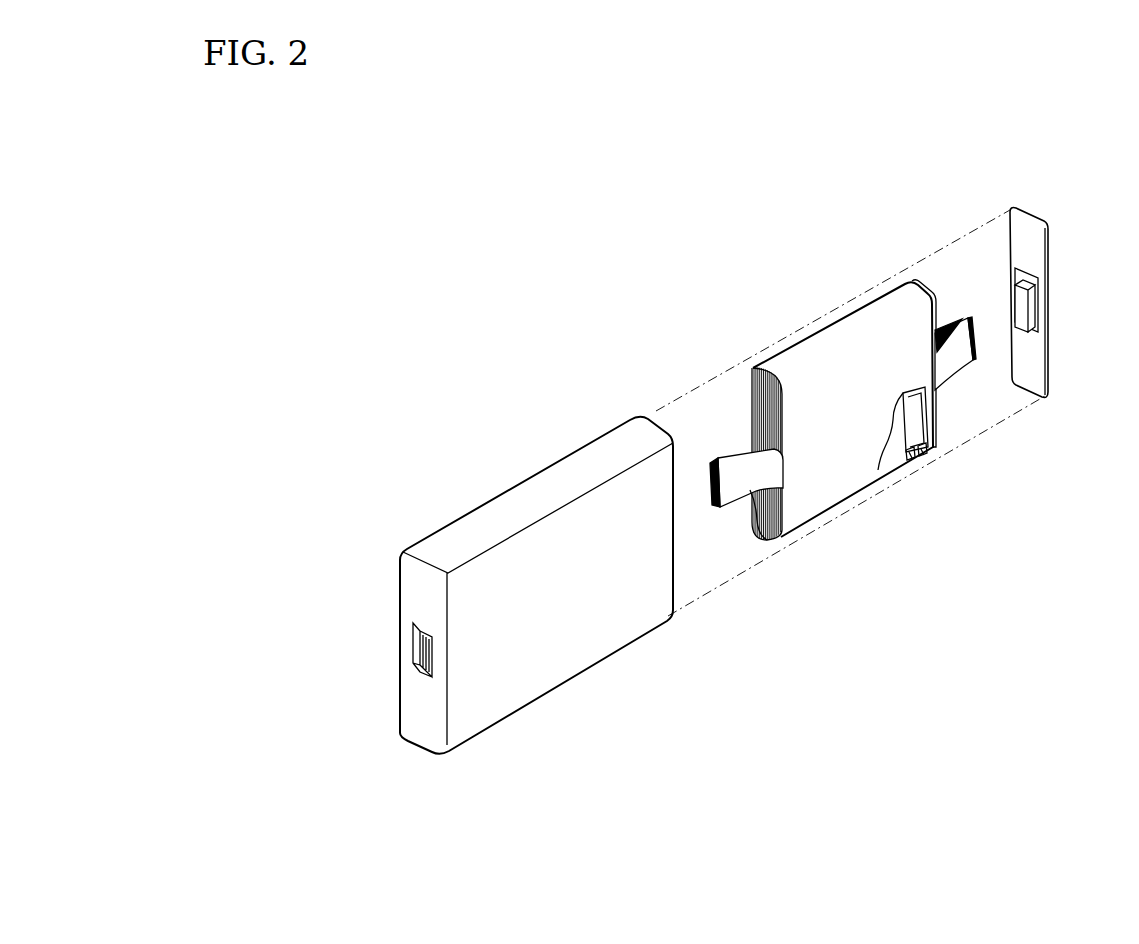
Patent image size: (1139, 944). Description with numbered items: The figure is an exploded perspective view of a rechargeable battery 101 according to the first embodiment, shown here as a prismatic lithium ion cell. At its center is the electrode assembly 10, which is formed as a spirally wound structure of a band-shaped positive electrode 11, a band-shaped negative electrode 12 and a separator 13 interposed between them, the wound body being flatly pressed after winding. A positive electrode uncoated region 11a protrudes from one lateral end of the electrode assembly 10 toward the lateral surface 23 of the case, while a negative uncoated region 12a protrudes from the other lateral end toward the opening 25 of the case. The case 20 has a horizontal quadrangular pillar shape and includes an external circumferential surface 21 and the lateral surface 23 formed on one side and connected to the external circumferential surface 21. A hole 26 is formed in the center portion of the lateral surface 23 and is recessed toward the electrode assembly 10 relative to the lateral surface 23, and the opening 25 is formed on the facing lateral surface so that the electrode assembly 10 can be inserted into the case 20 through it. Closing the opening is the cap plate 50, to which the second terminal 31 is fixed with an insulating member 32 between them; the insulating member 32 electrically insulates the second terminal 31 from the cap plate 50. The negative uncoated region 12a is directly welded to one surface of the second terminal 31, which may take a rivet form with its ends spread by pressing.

The rechargeable battery 101 is at (612, 155).
The electrode assembly 10 is at (851, 409).
The positive electrode 11 is at (897, 433).
The positive electrode uncoated region 11a is at (728, 490).
The negative electrode 12 is at (918, 450).
The negative uncoated region 12a is at (962, 343).
The separator 13 is at (903, 453).
The case 20 is at (508, 551).
The external circumferential surface 21 is at (487, 515).
The lateral surface 23 is at (412, 573).
The opening 25 is at (660, 416).
The hole 26 is at (420, 647).
The cap plate 50 is at (1061, 265).
The second terminal 31 is at (1030, 297).
The insulating member 32 is at (1033, 318).